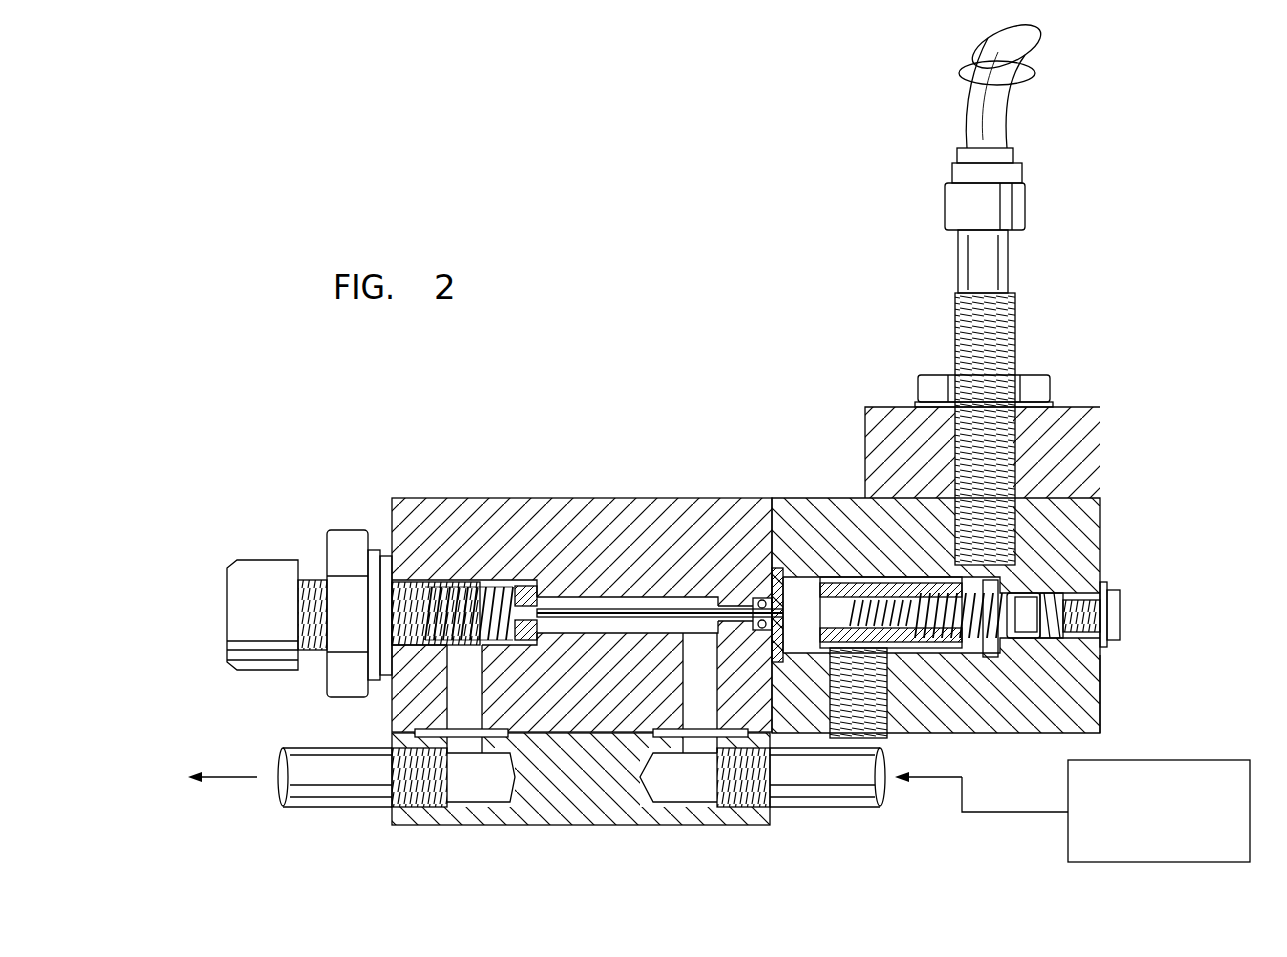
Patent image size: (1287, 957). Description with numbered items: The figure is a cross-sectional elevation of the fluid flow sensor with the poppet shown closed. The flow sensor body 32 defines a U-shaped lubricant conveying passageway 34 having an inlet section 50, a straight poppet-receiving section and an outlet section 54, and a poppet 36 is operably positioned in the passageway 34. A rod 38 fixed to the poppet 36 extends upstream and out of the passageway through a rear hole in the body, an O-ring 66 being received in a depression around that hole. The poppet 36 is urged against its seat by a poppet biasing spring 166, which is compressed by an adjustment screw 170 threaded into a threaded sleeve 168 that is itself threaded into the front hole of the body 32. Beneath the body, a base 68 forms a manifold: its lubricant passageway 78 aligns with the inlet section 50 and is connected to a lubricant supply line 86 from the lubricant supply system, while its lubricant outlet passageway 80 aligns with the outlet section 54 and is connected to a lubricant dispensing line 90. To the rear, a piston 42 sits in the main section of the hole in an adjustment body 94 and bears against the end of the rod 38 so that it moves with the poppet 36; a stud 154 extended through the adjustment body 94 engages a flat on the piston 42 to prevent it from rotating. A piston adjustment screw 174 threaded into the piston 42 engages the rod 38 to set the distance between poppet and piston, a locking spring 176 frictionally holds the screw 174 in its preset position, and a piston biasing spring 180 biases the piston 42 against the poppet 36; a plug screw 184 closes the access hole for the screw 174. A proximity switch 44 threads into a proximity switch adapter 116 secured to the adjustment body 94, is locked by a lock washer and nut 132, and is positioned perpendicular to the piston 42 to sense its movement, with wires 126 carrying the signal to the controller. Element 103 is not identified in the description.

The flow sensor body 32 is at (559, 490).
The lubricant conveying passageway 34 is at (579, 595).
The poppet 36 is at (508, 580).
The rod 38 is at (648, 600).
The piston 42 is at (858, 577).
The proximity switch 44 is at (1018, 264).
The inlet section 50 is at (711, 693).
The outlet section 54 is at (471, 698).
The O-ring 66 is at (760, 597).
The base 68 is at (520, 841).
The lubricant passageway 78 is at (688, 785).
The lubricant outlet passageway 80 is at (460, 780).
The lubricant supply line 86 is at (825, 810).
The lubricant dispensing line 90 is at (305, 808).
The adjustment body 94 is at (1110, 671).
The plate 103 is at (779, 568).
The proximity switch adapter 116 is at (1108, 438).
The wires 126 is at (960, 66).
The lock washer and nut 132 is at (1050, 378).
The stud 154 is at (885, 735).
The poppet biasing spring 166 is at (515, 585).
The threaded sleeve 168 is at (347, 530).
The adjustment screw 170 is at (270, 560).
The piston adjustment screw 174 is at (1018, 595).
The locking spring 176 is at (927, 597).
The piston biasing spring 180 is at (978, 632).
The plug screw 184 is at (1122, 585).